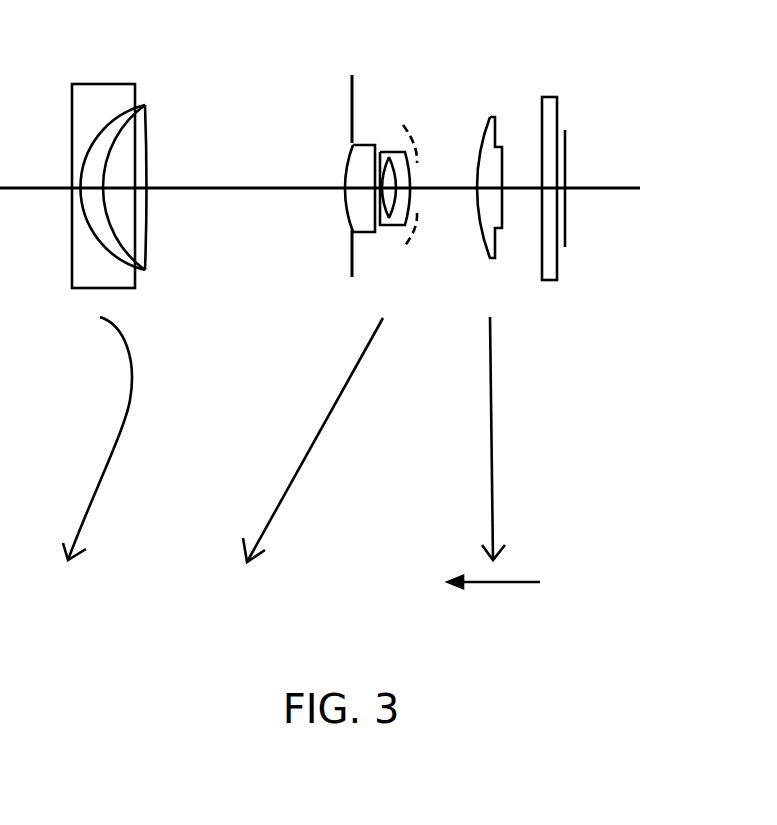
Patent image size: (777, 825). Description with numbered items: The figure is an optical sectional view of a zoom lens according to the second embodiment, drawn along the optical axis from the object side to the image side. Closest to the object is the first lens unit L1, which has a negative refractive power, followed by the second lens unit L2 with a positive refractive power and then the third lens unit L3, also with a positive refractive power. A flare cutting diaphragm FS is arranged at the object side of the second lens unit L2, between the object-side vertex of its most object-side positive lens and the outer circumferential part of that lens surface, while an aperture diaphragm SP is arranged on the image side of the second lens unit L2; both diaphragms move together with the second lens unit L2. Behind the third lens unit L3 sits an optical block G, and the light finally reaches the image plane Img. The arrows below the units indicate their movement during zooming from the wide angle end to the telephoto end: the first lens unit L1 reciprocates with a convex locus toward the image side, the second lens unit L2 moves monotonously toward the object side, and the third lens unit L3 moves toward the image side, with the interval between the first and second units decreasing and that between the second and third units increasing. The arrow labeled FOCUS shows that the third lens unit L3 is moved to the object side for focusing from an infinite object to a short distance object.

The first lens unit L1 is at (72, 55).
The second lens unit L2 is at (415, 57).
The third lens unit L3 is at (477, 57).
The optical block G is at (540, 57).
The flare cutting diaphragm FS is at (333, 190).
The aperture diaphragm SP is at (405, 215).
The image plane Img is at (641, 164).
The focusing movement arrow FOCUS is at (494, 599).